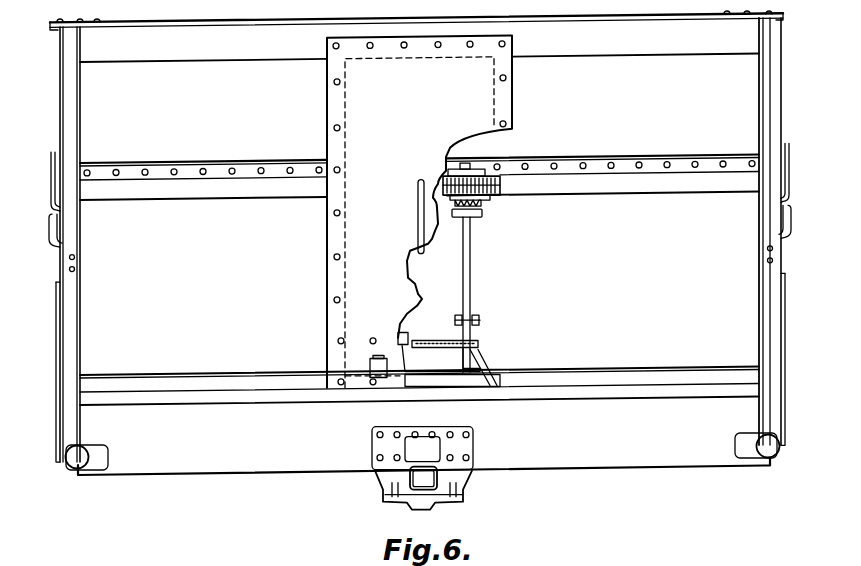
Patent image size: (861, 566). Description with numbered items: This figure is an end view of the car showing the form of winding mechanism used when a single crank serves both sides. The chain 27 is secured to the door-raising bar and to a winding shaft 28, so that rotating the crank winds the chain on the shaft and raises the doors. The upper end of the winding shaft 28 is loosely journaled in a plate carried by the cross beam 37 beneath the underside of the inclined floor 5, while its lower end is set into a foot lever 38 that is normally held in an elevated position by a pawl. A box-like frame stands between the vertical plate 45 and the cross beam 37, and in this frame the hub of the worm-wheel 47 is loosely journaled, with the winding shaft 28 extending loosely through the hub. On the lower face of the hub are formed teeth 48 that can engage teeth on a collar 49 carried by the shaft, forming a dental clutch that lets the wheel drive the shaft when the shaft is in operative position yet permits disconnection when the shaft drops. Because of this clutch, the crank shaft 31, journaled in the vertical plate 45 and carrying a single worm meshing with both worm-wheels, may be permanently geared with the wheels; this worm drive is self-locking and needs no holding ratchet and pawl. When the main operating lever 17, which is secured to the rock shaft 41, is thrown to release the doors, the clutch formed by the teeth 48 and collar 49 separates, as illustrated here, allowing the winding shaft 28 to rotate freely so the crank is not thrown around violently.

The inclined floor 5 is at (416, 243).
The main operating lever 17 is at (52, 203).
The chain 27 is at (480, 331).
The winding shaft 28 is at (473, 272).
The crank shaft 31 is at (418, 220).
The cross beam 37 is at (419, 178).
The foot lever 38 is at (380, 365).
The rock shaft 41 is at (307, 374).
The vertical plate 45 is at (419, 212).
The worm-wheel 47 is at (498, 189).
The teeth 48 is at (482, 210).
The collar 49 is at (478, 223).